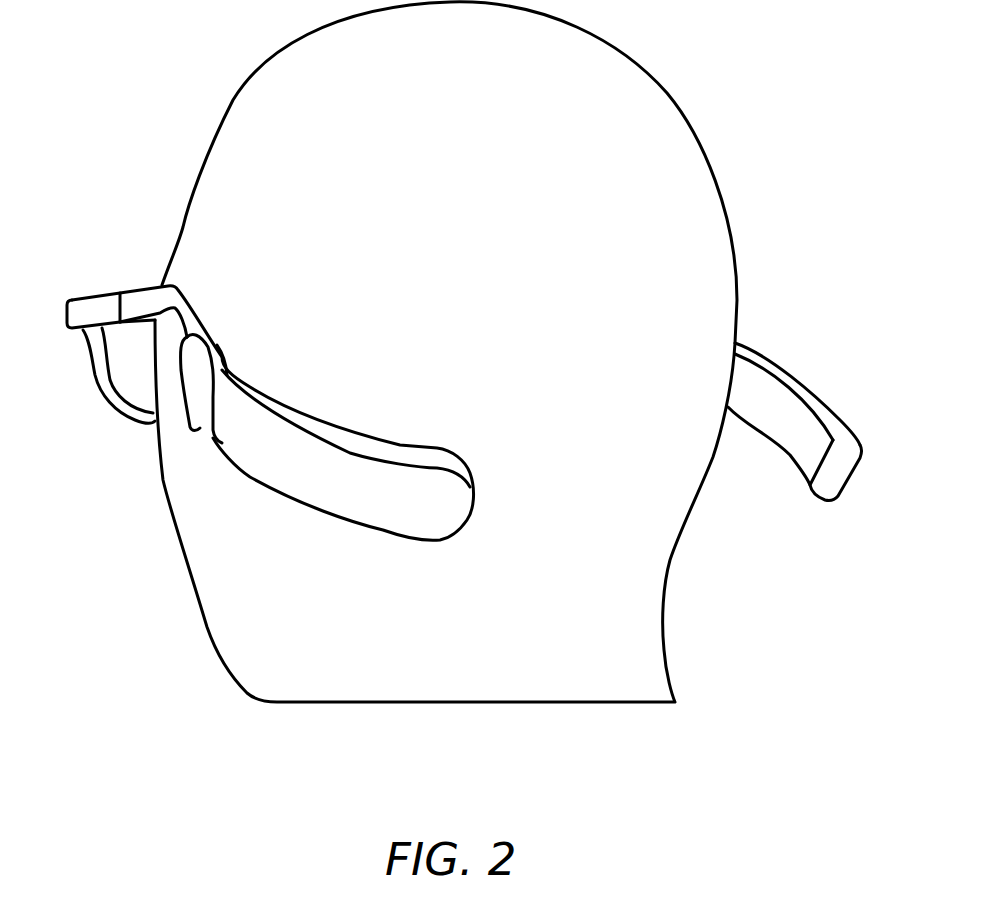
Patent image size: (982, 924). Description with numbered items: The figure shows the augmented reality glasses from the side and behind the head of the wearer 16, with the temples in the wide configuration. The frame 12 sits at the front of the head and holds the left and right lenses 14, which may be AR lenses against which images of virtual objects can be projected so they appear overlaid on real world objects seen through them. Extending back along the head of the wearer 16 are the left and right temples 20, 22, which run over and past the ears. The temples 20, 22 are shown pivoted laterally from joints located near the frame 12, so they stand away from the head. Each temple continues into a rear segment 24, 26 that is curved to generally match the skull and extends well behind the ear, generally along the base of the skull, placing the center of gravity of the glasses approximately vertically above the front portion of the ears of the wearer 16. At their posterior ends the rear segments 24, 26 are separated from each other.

The frame 12 is at (84, 297).
The lenses 14 is at (123, 352).
The wearer 16 is at (696, 141).
The left temple 20 is at (230, 437).
The right temple 22 is at (773, 368).
The rear segment 24 is at (355, 505).
The rear segment 26 is at (838, 406).